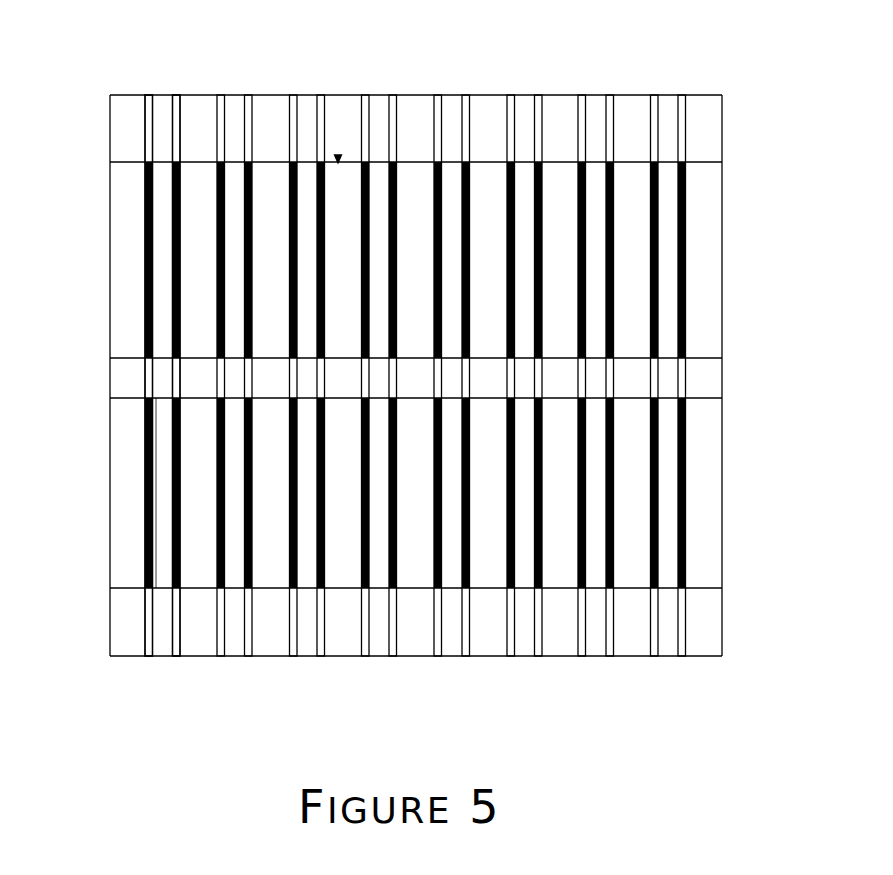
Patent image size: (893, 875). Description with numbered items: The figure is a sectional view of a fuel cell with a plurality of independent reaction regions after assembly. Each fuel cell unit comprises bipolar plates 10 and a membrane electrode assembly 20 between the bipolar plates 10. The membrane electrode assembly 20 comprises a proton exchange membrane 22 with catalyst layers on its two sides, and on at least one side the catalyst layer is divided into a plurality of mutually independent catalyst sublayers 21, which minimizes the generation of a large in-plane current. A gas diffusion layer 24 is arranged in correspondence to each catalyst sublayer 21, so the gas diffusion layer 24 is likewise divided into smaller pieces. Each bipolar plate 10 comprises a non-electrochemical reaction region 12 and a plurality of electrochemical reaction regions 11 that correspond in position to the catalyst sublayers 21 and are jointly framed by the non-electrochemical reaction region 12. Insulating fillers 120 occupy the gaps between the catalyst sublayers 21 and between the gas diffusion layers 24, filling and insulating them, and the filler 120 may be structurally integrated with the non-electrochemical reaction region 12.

The bipolar plate 10 is at (127, 86).
The membrane electrode assembly 20 is at (164, 86).
The electrochemical reaction region 11 is at (339, 268).
The non-electrochemical reaction region 12 is at (339, 366).
The insulating filler 120 is at (139, 378).
The catalyst sublayer 21 is at (155, 329).
The proton exchange membrane 22 is at (163, 453).
The gas diffusion layer 24 is at (142, 222).